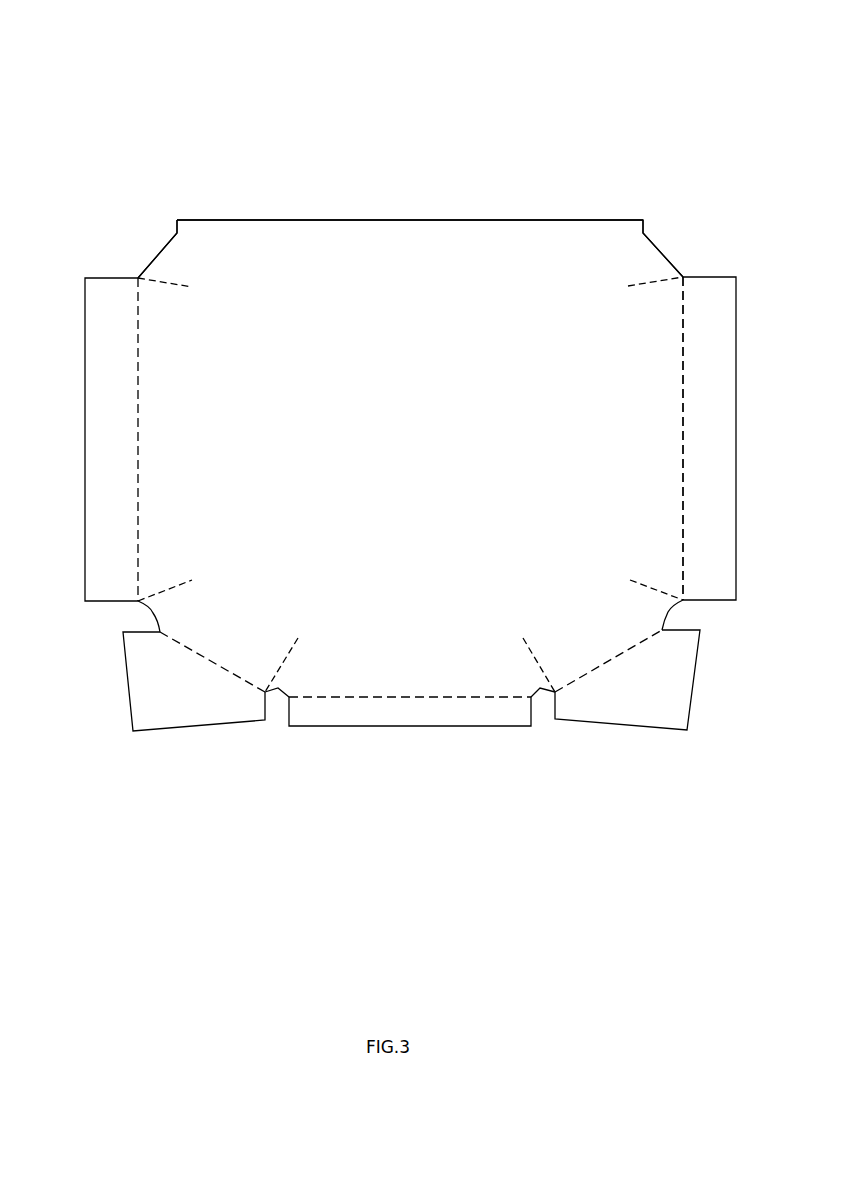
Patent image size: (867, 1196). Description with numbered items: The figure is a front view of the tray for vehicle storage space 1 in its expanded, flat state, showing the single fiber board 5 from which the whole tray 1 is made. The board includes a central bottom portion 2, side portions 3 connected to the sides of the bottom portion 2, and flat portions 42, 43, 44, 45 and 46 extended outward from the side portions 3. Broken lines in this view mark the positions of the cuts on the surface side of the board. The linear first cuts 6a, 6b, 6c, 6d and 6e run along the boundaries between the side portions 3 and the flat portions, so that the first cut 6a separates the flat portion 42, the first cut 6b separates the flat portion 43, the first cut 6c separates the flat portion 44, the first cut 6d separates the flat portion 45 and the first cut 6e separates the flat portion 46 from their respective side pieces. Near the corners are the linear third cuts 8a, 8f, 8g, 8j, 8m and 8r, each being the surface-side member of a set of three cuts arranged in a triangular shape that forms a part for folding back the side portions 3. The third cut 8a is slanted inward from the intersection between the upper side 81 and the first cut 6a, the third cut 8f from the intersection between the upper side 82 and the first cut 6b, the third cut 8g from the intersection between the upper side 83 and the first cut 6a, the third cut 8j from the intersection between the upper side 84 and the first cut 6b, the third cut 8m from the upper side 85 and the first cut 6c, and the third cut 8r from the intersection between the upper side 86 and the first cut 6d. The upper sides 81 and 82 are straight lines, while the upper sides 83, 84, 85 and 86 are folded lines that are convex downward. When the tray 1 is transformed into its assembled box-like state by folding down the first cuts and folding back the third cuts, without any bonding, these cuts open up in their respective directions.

The tray for vehicle storage space 1 is at (646, 71).
The bottom portion 2 is at (400, 355).
The side portions 3 is at (640, 342).
The fiber board 5 is at (318, 220).
The first cut 6a is at (140, 378).
The first cut 6b is at (683, 432).
The first cut 6c is at (185, 640).
The first cut 6d is at (625, 650).
The first cut 6e is at (410, 695).
The third cut 8a is at (170, 282).
The third cut 8f is at (645, 285).
The third cut 8g is at (170, 585).
The third cut 8j is at (640, 588).
The third cut 8m is at (290, 642).
The third cut 8r is at (527, 640).
The flat portion 42 is at (97, 386).
The flat portion 43 is at (727, 377).
The flat portion 44 is at (195, 705).
The flat portion 45 is at (630, 705).
The flat portion 46 is at (385, 708).
The upper side 81 is at (165, 245).
The upper side 82 is at (657, 245).
The upper side 83 is at (150, 612).
The upper side 84 is at (670, 613).
The upper side 85 is at (272, 695).
The upper side 86 is at (545, 695).